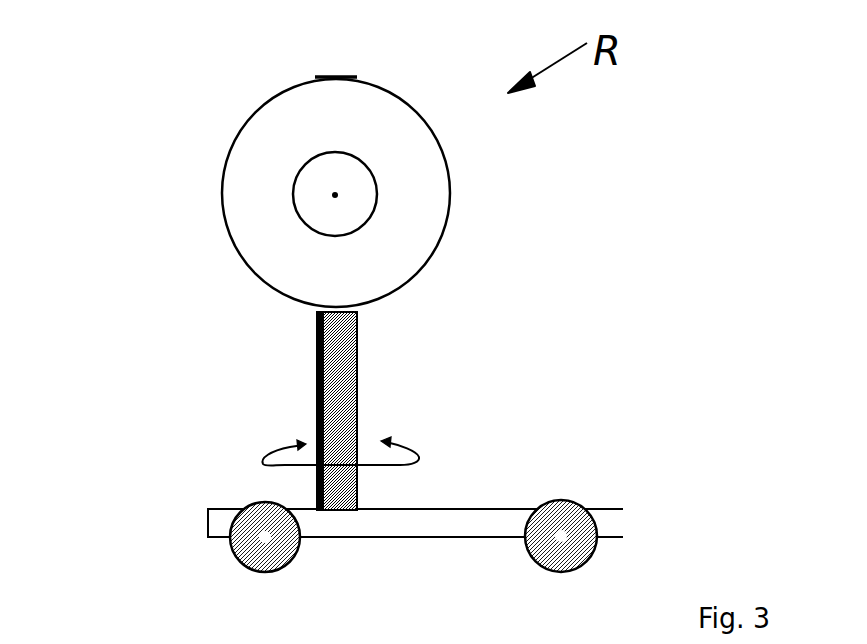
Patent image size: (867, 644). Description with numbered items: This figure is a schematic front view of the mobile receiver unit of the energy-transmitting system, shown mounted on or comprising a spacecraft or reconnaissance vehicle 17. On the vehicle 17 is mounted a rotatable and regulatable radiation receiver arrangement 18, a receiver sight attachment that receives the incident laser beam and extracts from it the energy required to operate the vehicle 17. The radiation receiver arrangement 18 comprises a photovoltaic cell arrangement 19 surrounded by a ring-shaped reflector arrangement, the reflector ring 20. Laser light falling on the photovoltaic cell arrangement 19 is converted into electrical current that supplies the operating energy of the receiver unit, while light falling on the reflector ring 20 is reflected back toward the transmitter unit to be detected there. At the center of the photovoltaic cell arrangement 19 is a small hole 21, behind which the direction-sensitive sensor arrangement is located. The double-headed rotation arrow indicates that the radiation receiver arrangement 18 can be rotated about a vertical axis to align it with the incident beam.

The reconnaissance vehicle 17 is at (475, 527).
The radiation receiver arrangement 18 is at (435, 293).
The photovoltaic cell arrangement 19 is at (345, 173).
The reflector ring 20 is at (422, 198).
The hole 21 is at (333, 192).